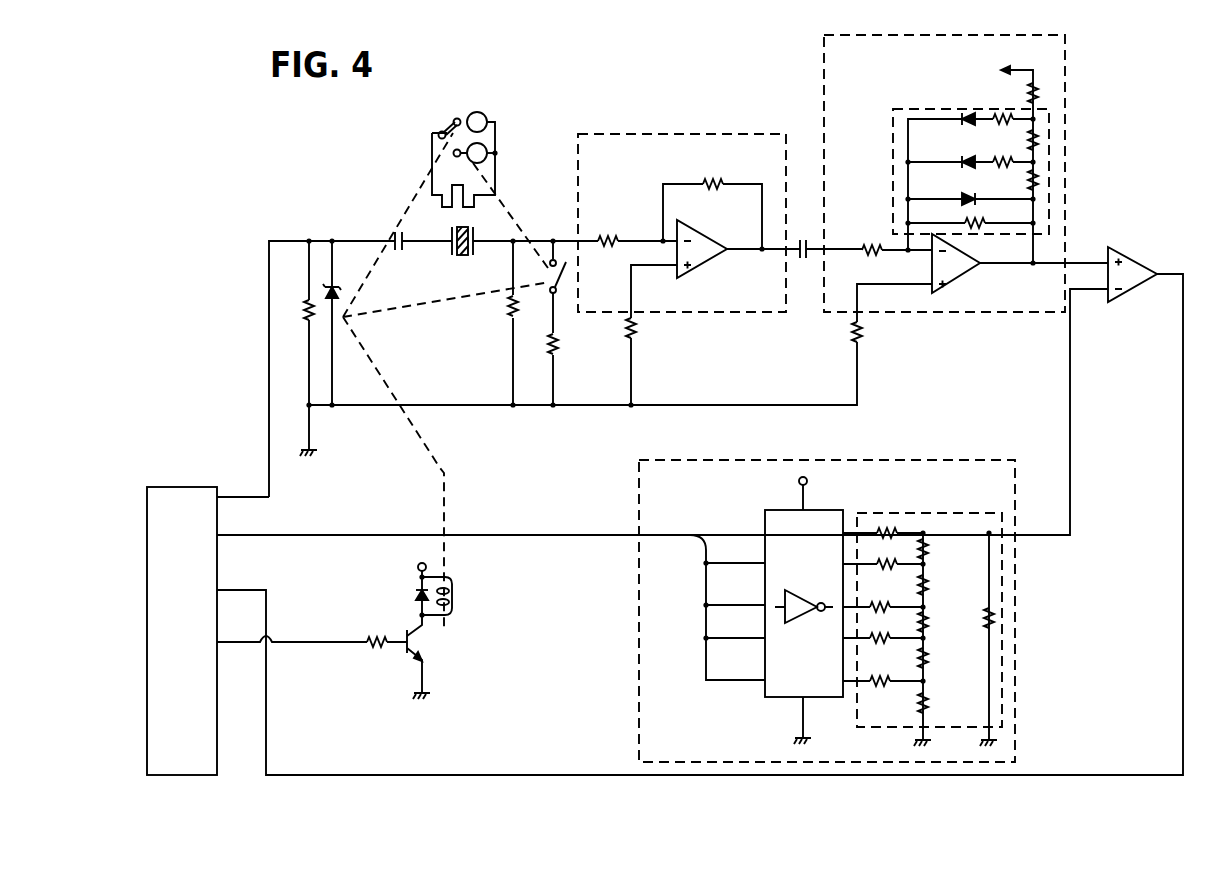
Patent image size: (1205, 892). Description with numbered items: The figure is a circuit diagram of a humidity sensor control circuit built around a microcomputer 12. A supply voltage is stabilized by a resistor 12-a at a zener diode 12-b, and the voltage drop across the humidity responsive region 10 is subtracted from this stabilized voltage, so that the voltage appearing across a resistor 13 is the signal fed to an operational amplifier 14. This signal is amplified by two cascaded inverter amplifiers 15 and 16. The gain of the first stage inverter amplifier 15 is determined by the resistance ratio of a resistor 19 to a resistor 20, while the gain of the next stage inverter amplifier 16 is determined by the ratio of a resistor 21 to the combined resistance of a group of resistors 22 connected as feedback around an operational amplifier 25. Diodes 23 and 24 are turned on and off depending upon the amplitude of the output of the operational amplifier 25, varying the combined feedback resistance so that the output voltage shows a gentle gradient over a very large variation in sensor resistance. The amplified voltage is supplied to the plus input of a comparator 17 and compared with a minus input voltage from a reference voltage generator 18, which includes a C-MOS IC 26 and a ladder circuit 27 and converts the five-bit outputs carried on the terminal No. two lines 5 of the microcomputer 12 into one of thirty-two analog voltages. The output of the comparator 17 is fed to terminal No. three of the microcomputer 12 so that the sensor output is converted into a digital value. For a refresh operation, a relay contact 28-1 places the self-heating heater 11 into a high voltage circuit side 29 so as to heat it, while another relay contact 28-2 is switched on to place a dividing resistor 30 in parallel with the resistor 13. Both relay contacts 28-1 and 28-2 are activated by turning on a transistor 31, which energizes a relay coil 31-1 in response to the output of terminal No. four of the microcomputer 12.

The signal line 5 is at (497, 530).
The humidity responsive region 10 is at (462, 262).
The self-heating heater 11 is at (432, 201).
The microcomputer 12 is at (175, 495).
The resistor 12-a is at (305, 312).
The zener diode 12-b is at (338, 318).
The resistor 13 is at (510, 312).
The operational amplifier 14 is at (705, 255).
The first stage inverter amplifier 15 is at (720, 202).
The inverter amplifier 16 is at (909, 188).
The comparator 17 is at (1130, 262).
The reference voltage generator 18 is at (827, 579).
The resistor 19 is at (608, 232).
The resistor 20 is at (706, 180).
The resistor 21 is at (870, 242).
The group of resistors 22 is at (893, 110).
The diode 23 is at (960, 158).
The diode 24 is at (968, 115).
The operational amplifier 25 is at (960, 270).
The C-MOS IC 26 is at (830, 515).
The ladder circuit 27 is at (920, 512).
The relay contact 28-1 is at (452, 118).
The relay contact 28-2 is at (563, 292).
The high voltage circuit side 29 is at (495, 140).
The dividing resistor 30 is at (548, 355).
The transistor 31 is at (402, 652).
The relay coil 31-1 is at (455, 604).